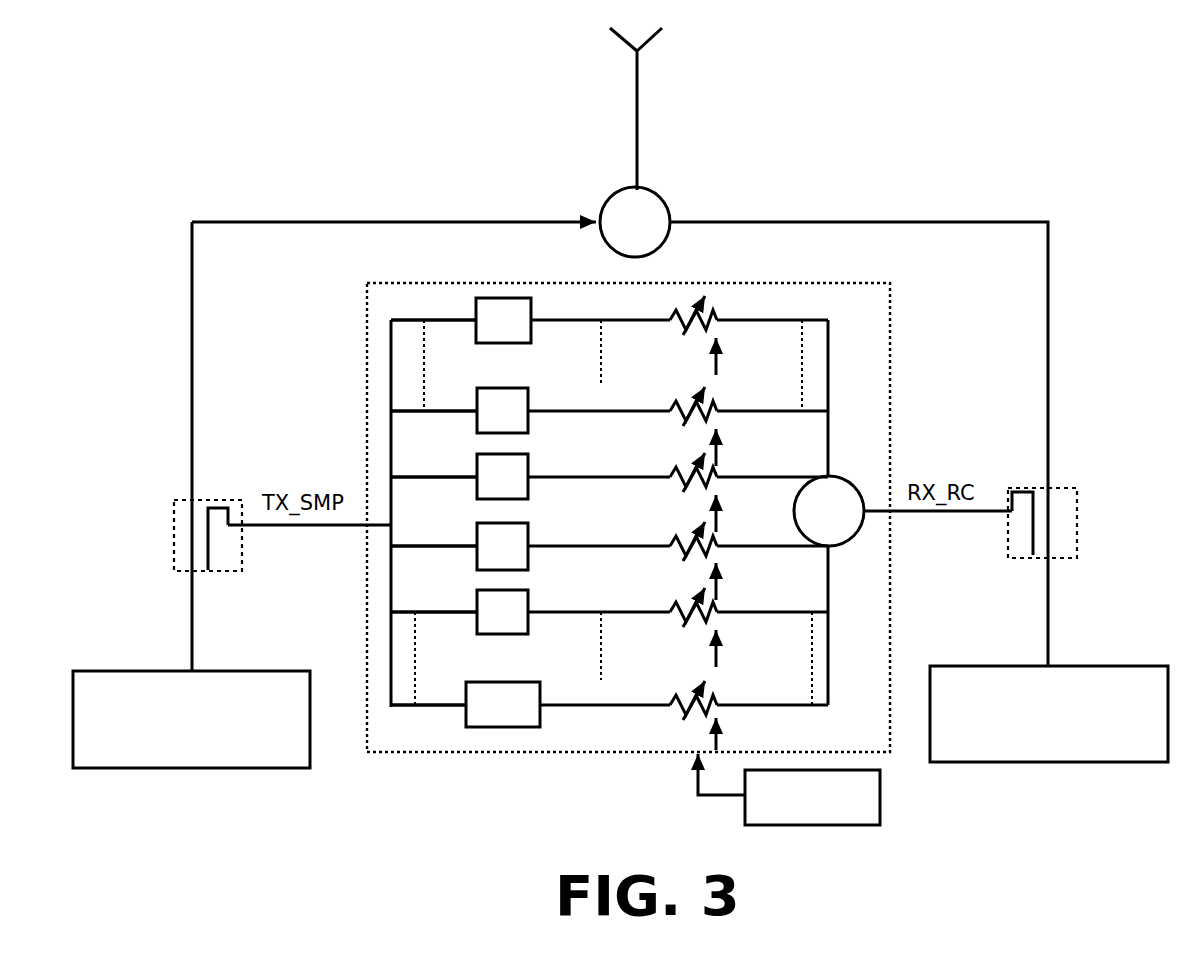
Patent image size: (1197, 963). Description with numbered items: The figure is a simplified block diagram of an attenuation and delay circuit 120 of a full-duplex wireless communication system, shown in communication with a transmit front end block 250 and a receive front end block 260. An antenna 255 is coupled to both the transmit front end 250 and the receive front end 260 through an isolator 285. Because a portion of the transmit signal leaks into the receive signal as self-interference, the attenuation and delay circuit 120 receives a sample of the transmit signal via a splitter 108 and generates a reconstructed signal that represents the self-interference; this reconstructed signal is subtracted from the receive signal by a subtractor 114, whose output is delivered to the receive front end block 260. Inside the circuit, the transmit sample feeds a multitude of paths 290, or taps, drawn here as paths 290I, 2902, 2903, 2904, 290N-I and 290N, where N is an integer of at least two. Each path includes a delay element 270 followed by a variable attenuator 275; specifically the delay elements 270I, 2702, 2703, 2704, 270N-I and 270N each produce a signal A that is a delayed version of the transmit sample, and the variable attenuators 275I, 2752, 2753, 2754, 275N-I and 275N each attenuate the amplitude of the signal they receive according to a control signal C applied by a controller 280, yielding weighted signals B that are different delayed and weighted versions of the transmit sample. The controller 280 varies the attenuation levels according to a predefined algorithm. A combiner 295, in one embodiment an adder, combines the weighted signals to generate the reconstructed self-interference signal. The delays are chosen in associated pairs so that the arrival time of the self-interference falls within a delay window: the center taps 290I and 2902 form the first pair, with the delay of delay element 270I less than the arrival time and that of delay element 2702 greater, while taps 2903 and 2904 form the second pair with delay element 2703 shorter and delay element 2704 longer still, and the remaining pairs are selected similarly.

The antenna 255 is at (637, 100).
The isolator 285 is at (657, 193).
The splitter 108 is at (174, 520).
The subtractor 114 is at (1077, 510).
The transmit front end block 250 is at (215, 671).
The receive front end block 260 is at (1088, 666).
The attenuation and delay circuit 120 is at (626, 533).
The controller 280 is at (880, 800).
The combiner 295 is at (855, 483).
The delay element 270 is at (491, 512).
The delay element of path N 270N is at (500, 343).
The delay element of path 4 2704 is at (497, 433).
The delay element of path 2 2702 is at (497, 498).
The delay element of path 1 270I is at (492, 570).
The delay element of path 3 2703 is at (500, 634).
The delay element of path N-1 270N-I is at (466, 693).
The variable attenuator 275 is at (686, 494).
The variable attenuator of path N 275N is at (690, 300).
The variable attenuator of path 4 2754 is at (688, 397).
The variable attenuator of path 2 2752 is at (688, 465).
The variable attenuator of path 1 275I is at (685, 535).
The variable attenuator of path 3 2753 is at (683, 598).
The variable attenuator of path N-1 275N-I is at (683, 690).
The path 290 is at (387, 522).
The path N 290N is at (437, 318).
The path 4 2904 is at (413, 410).
The path 2 2902 is at (413, 476).
The path 1 290I is at (415, 548).
The path 3 2903 is at (415, 612).
The path N-1 290N-I is at (403, 707).